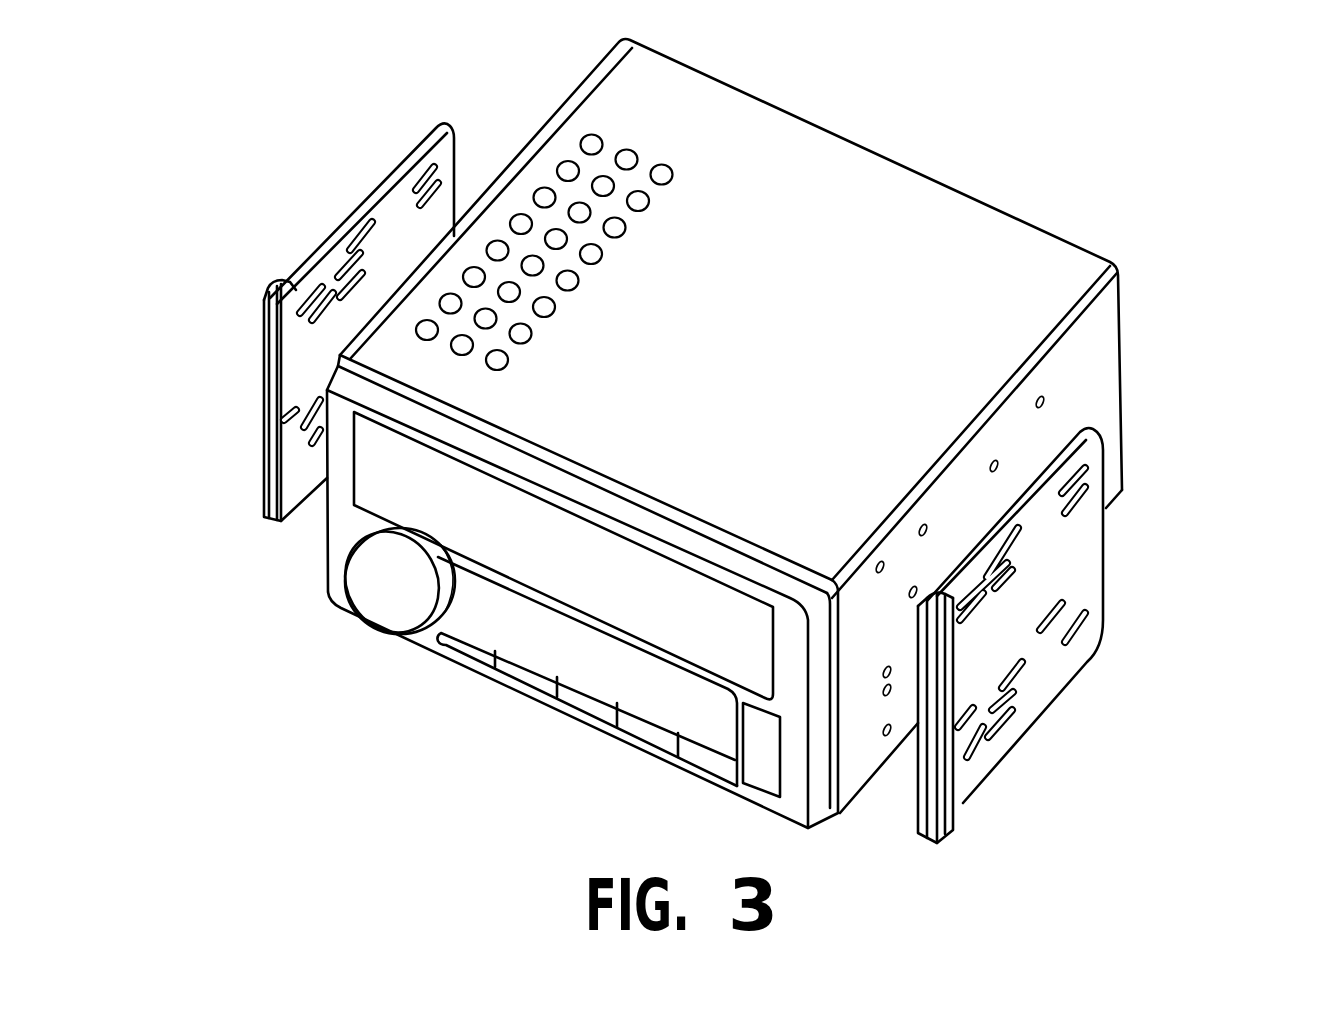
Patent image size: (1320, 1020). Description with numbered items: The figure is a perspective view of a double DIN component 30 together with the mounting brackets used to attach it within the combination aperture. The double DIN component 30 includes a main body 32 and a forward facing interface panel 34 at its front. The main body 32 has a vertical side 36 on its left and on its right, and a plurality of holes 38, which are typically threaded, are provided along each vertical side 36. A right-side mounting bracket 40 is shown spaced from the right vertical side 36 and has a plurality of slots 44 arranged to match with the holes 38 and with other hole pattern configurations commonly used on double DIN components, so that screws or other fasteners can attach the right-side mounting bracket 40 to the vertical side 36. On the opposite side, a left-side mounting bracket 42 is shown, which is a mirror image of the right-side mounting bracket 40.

The double DIN component 30 is at (922, 145).
The main body 32 is at (1030, 258).
The forward facing interface panel 34 is at (437, 647).
The vertical side 36 is at (1110, 333).
The holes 38 is at (1000, 462).
The right-side mounting bracket 40 is at (1095, 575).
The left-side mounting bracket 42 is at (307, 250).
The slots 44 is at (1080, 633).